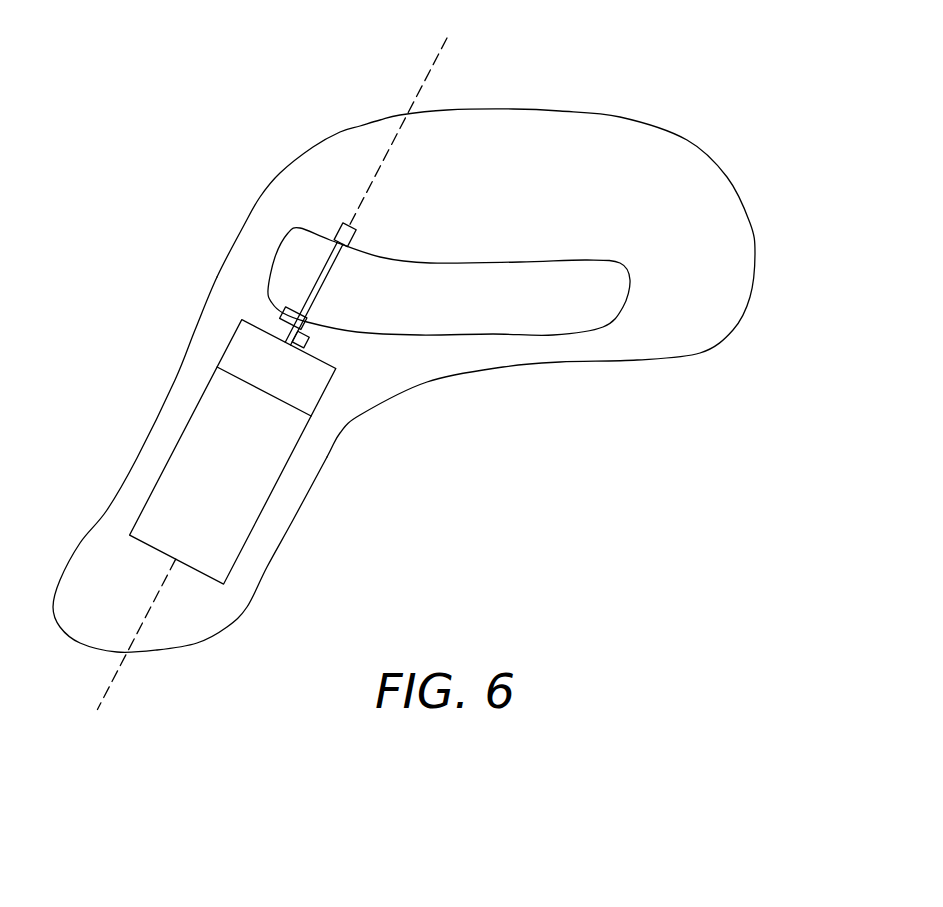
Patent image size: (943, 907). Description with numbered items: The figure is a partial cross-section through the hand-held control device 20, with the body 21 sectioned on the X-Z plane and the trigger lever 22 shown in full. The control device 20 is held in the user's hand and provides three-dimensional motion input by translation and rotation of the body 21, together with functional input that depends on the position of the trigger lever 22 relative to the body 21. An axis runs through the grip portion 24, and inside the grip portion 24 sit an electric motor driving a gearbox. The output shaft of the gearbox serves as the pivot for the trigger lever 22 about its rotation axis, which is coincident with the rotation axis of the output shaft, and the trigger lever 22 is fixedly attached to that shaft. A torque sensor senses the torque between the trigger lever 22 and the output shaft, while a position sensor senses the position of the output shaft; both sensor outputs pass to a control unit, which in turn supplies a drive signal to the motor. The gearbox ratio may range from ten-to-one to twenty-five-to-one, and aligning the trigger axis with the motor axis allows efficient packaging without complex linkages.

The control device 20 is at (368, 106).
The body 21 is at (757, 252).
The trigger lever 22 is at (500, 325).
The grip portion 24 is at (137, 462).